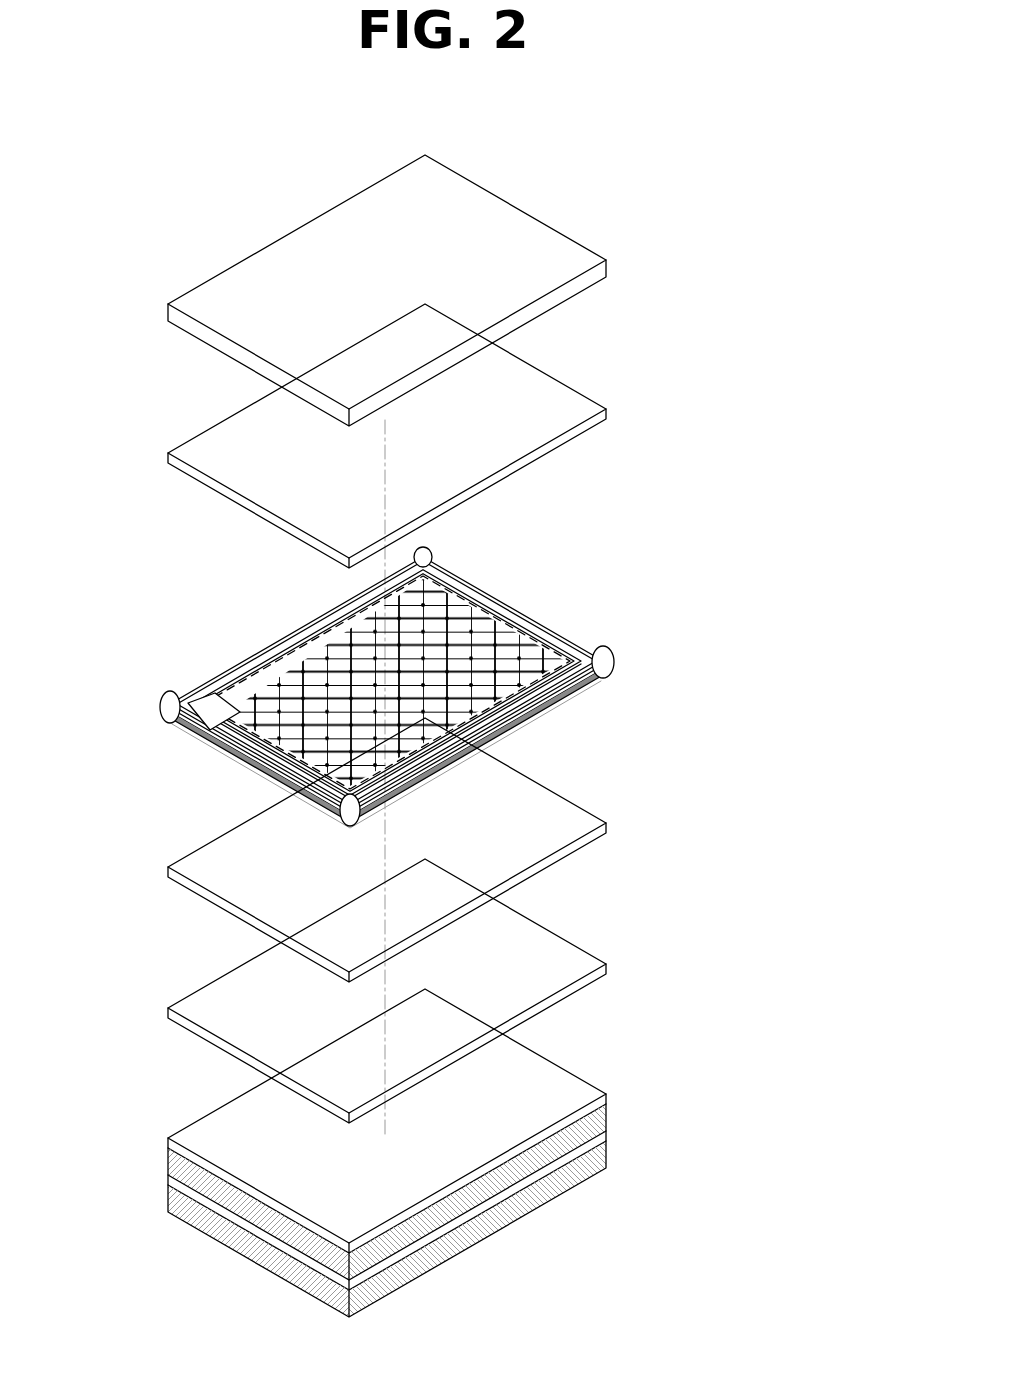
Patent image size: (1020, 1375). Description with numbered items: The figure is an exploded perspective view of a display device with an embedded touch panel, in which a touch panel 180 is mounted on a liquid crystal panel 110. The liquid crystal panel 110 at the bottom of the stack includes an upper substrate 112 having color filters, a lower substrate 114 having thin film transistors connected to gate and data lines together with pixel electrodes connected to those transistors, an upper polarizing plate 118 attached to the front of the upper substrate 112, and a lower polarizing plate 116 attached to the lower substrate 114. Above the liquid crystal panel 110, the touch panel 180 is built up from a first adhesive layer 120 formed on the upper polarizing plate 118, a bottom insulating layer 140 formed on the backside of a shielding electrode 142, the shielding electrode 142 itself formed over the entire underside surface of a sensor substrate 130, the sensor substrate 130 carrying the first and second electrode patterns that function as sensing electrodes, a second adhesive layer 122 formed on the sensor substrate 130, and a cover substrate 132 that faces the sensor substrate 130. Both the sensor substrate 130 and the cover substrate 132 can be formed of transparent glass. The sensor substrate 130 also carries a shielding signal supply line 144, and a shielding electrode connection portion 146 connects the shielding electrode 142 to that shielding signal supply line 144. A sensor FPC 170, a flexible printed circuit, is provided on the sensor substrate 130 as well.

The liquid crystal panel 110 is at (471, 1153).
The upper substrate 112 is at (598, 1122).
The lower substrate 114 is at (600, 1153).
The lower polarizing plate 116 is at (432, 1229).
The upper polarizing plate 118 is at (573, 1092).
The first adhesive layer 120 is at (572, 960).
The second adhesive layer 122 is at (567, 400).
The sensor substrate 130 is at (560, 692).
The cover substrate 132 is at (538, 247).
The bottom insulating layer 140 is at (575, 823).
The shielding electrode 142 is at (522, 723).
The shielding signal supply line 144 is at (565, 632).
The shielding electrode connection portion 146 is at (612, 652).
The sensor FPC 170 is at (183, 725).
The touch panel 180 is at (505, 612).